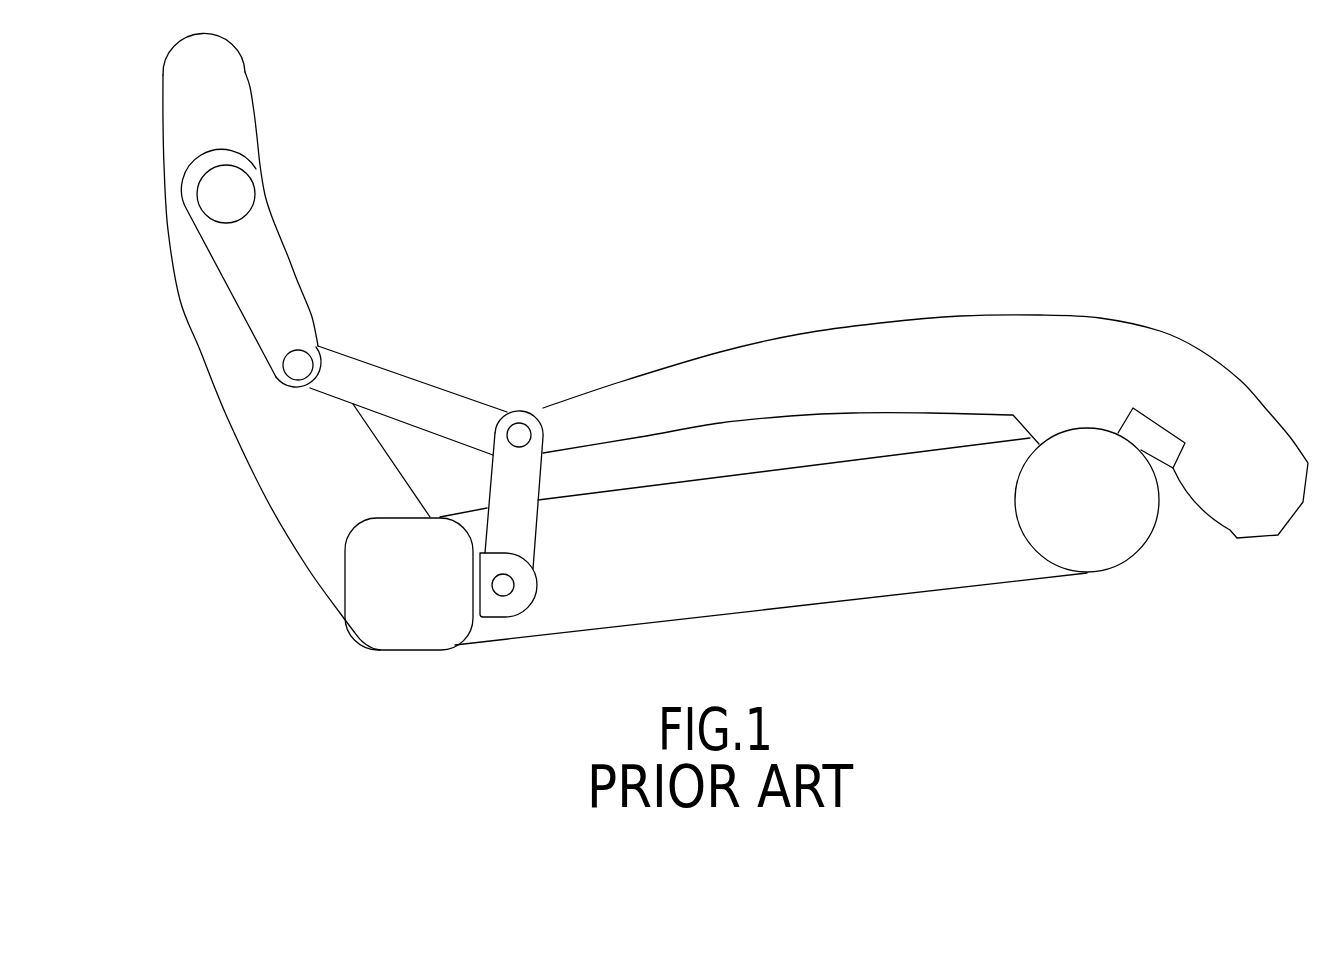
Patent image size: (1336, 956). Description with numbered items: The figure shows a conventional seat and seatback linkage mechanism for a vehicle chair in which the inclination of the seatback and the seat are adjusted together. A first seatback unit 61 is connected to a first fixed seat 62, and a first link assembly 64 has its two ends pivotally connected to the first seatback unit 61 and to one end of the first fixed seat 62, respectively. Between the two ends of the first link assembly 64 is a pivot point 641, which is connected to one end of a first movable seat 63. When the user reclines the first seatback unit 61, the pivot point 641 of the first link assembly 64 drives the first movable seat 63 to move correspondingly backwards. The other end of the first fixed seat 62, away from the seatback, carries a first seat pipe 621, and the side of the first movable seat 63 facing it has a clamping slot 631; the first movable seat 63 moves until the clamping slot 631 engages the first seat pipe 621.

The first seatback unit 61 is at (233, 95).
The first fixed seat 62 is at (910, 573).
The first seat pipe 621 is at (1107, 550).
The first movable seat 63 is at (925, 405).
The clamping slot 631 is at (1157, 453).
The first link assembly 64 is at (403, 390).
The pivot point 641 is at (517, 430).